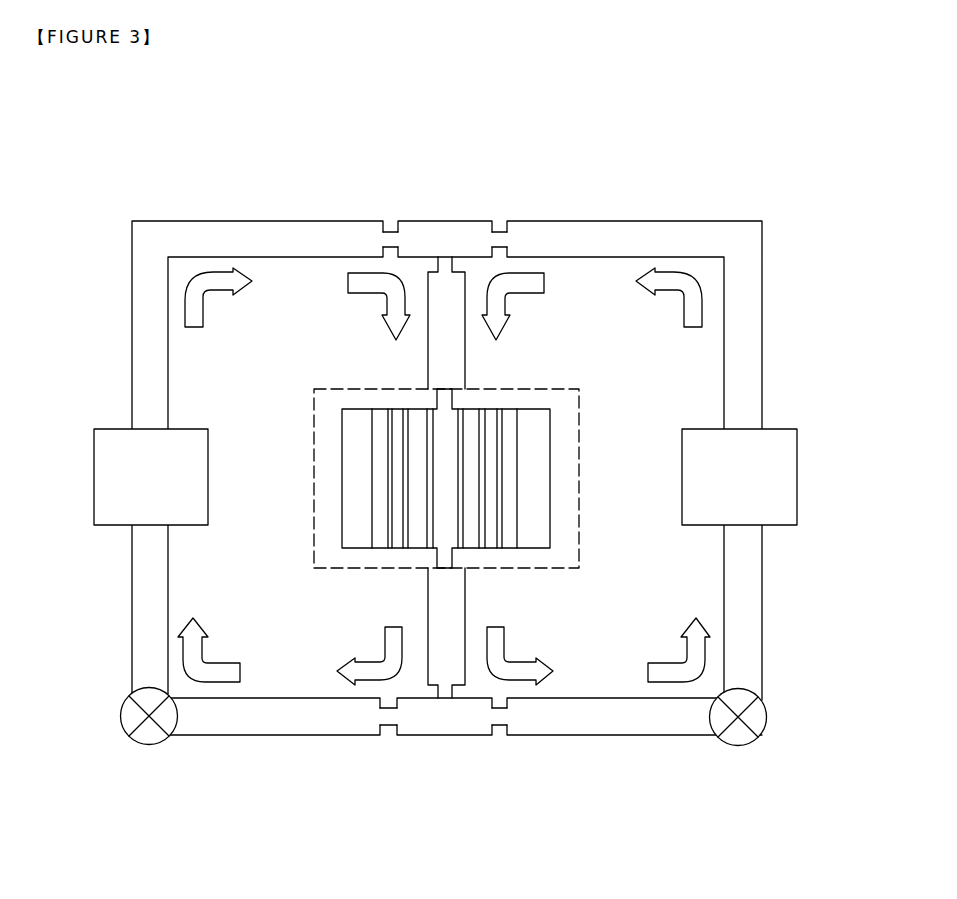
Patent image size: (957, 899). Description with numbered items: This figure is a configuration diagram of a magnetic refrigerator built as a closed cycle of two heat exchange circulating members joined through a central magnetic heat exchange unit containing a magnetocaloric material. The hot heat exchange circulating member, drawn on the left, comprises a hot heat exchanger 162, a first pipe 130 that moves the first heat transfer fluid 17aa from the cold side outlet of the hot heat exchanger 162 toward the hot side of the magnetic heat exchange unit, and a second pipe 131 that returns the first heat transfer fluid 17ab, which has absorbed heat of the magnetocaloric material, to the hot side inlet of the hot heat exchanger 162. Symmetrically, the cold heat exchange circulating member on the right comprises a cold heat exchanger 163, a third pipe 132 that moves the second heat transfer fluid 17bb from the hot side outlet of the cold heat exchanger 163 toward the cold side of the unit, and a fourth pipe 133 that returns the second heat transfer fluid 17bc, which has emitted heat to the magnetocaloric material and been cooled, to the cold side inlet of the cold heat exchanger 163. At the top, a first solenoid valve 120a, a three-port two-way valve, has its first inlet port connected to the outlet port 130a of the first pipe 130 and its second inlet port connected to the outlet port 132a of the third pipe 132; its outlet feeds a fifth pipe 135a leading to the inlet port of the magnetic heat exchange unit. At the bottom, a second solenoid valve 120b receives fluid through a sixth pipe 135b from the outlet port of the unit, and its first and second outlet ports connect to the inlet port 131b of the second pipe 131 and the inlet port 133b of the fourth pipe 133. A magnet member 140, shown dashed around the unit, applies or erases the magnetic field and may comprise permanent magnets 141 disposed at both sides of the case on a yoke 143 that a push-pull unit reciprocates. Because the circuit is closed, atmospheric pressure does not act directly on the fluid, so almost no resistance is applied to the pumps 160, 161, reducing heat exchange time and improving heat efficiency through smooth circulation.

The first solenoid valve 120a is at (445, 221).
The second solenoid valve 120b is at (444, 735).
The first pipe 130 is at (265, 221).
The outlet port of the first pipe 130a is at (383, 221).
The second pipe 131 is at (265, 735).
The inlet port of the second pipe 131b is at (385, 735).
The third pipe 132 is at (655, 221).
The outlet port of the third pipe 132a is at (502, 221).
The fourth pipe 133 is at (655, 735).
The inlet port of the fourth pipe 133b is at (500, 735).
The fifth pipe 135a is at (465, 362).
The sixth pipe 135b is at (465, 595).
The magnet member 140 is at (469, 478).
The permanent magnet 141 is at (383, 434).
The yoke 143 is at (358, 489).
The pump 160 is at (121, 712).
The pump 161 is at (767, 716).
The hot heat exchanger 162 is at (94, 475).
The cold heat exchanger 163 is at (797, 475).
The first heat transfer fluid 17aa is at (385, 310).
The second heat transfer fluid 17bb is at (505, 305).
The first heat transfer fluid 17ab is at (385, 640).
The second heat transfer fluid 17bc is at (504, 640).